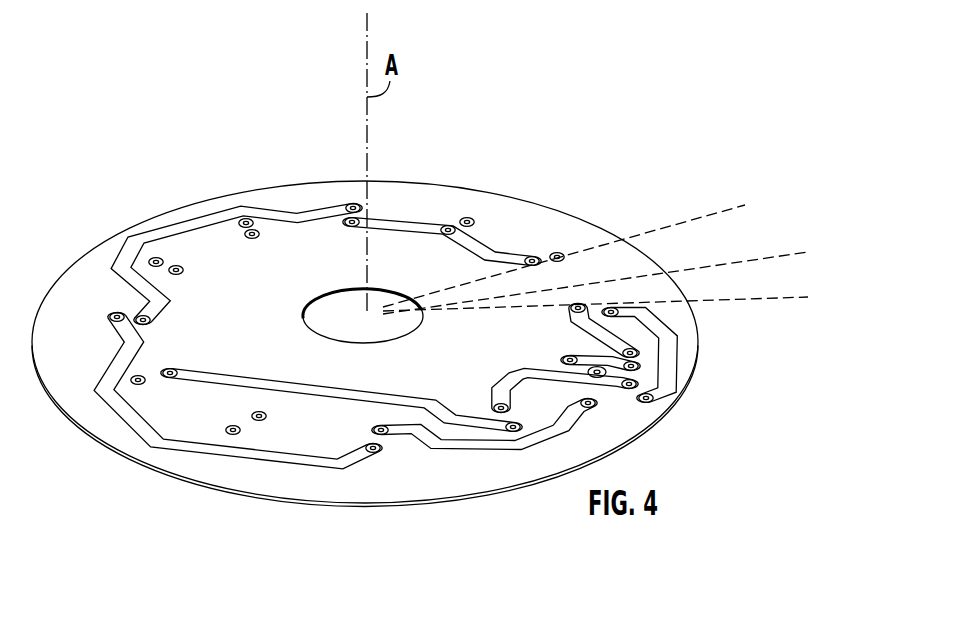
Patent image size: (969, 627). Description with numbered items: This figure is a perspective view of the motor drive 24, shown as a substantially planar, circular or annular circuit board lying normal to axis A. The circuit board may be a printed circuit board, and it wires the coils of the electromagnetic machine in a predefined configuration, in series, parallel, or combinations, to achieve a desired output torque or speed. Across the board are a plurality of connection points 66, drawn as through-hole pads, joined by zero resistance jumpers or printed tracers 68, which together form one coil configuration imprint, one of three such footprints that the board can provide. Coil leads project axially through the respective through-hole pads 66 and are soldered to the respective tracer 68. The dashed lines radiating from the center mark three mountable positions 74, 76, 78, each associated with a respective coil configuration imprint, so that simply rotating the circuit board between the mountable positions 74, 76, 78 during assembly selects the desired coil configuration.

The motor drive 24 is at (603, 130).
The connection points 66 is at (258, 421).
The printed tracers 68 is at (416, 222).
The mountable position 74 is at (704, 217).
The mountable position 76 is at (779, 255).
The mountable position 78 is at (778, 297).